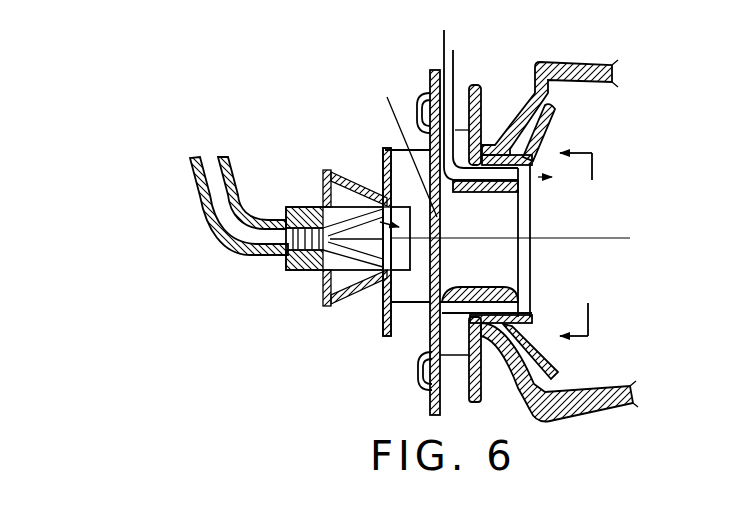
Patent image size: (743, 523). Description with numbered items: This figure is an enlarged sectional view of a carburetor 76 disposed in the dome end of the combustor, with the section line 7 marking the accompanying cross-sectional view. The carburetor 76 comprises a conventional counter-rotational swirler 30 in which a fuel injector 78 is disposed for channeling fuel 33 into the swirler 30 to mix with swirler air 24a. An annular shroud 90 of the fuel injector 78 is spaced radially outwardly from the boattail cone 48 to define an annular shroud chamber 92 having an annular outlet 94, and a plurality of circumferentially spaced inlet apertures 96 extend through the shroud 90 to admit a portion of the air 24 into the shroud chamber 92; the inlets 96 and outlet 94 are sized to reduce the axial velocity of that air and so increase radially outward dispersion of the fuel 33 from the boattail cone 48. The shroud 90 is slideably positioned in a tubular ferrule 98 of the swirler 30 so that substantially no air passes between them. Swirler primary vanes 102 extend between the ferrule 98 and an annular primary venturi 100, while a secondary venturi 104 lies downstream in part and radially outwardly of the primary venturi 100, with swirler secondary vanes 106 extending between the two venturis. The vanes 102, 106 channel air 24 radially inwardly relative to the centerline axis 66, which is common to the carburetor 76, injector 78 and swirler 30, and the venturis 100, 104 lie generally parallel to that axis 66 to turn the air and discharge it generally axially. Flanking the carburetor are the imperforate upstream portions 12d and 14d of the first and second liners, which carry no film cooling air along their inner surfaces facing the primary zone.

The swirler secondary vanes 106 is at (469, 90).
The counter-rotational swirler 30 is at (420, 88).
The swirler primary vanes 102 is at (460, 220).
The swirler air 24a is at (455, 73).
The upstream portion of first liner 12d is at (597, 61).
The fuel 33 is at (212, 156).
The air 24 is at (302, 183).
The inlet apertures 96 is at (328, 172).
The boattail cone 48 is at (368, 200).
The annular shroud 90 is at (298, 206).
The section line 7- 7 is at (591, 243).
The secondary venturi 104 is at (529, 189).
The centerline axis 66 is at (628, 238).
The primary venturi 100 is at (523, 209).
The fuel injector 78 is at (277, 272).
The annular shroud chamber 92 is at (350, 284).
The tubular ferrule 98 is at (326, 307).
The annular outlet 94 is at (391, 322).
The carburetor 76 is at (429, 407).
The upstream portion of second liner 14d is at (617, 386).